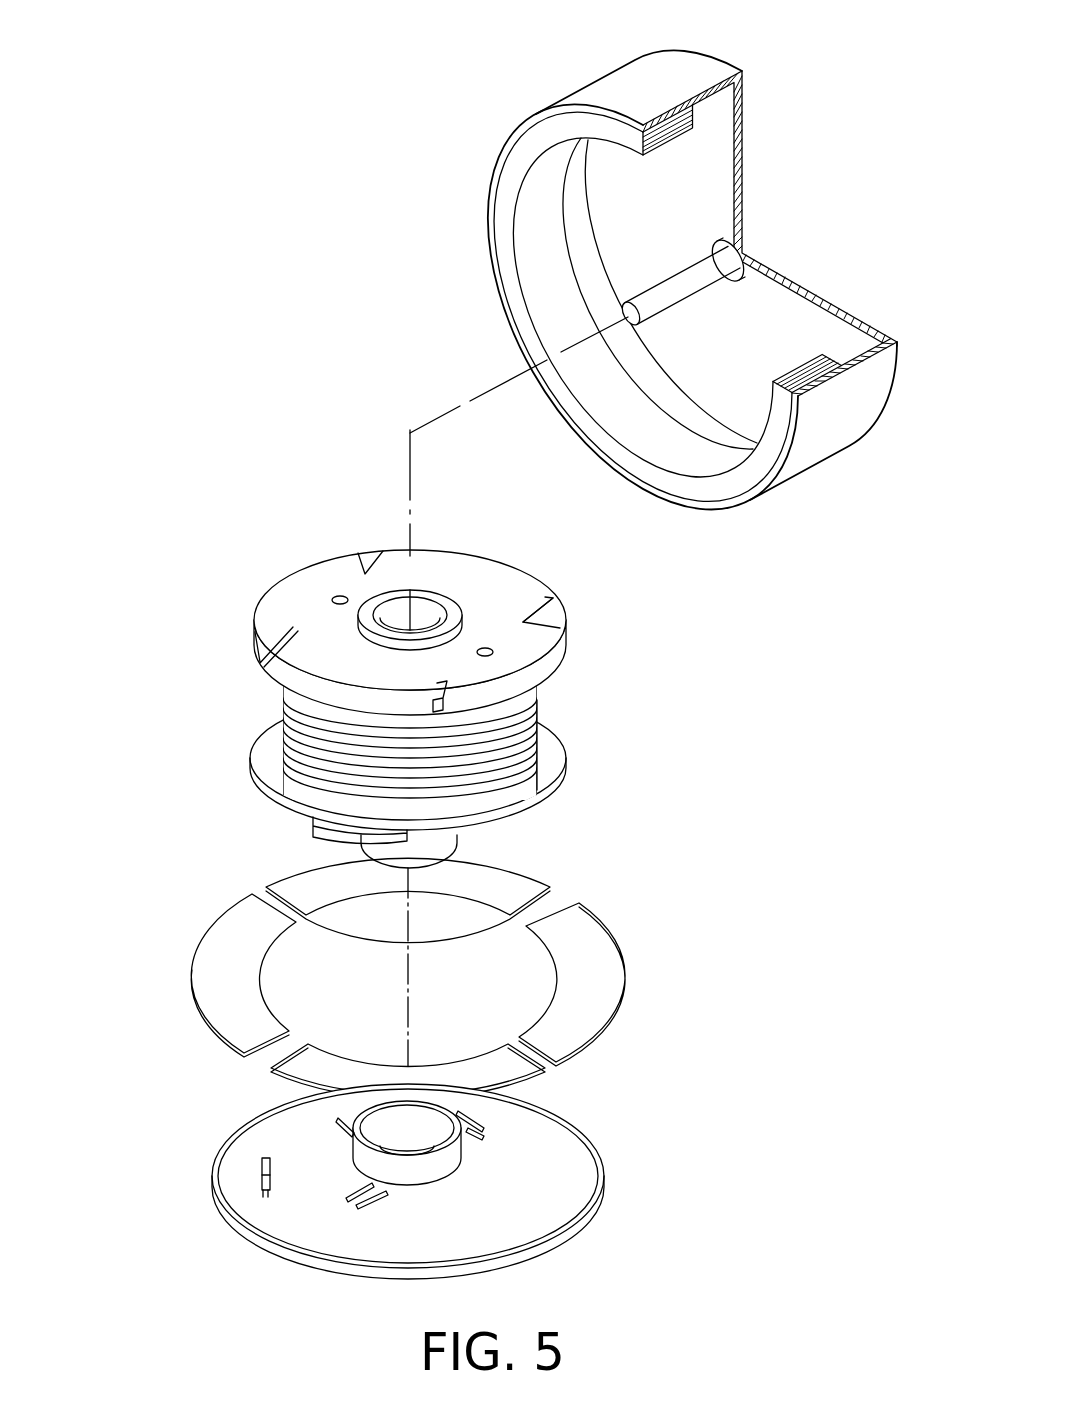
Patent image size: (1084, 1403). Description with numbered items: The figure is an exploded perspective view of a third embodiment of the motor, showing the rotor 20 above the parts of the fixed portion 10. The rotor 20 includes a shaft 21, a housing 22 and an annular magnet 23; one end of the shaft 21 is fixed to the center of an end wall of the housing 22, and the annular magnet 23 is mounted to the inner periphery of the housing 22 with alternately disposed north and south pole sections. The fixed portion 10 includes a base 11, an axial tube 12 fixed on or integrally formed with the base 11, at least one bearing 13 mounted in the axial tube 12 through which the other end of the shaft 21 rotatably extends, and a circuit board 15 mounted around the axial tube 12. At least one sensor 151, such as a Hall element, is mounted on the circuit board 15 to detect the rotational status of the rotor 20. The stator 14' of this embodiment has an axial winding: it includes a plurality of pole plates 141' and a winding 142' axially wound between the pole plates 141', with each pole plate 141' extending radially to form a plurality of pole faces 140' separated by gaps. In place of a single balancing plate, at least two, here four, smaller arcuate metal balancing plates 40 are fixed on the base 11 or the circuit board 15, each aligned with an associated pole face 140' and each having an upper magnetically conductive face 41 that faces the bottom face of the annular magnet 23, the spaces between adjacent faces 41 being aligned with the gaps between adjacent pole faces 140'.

The fixed portion 10 is at (473, 854).
The base 11 is at (418, 1171).
The axial tube 12 is at (516, 703).
The bearing 13 is at (443, 622).
The stator 14' is at (649, 694).
The pole faces 140' is at (537, 760).
The pole plates 141' is at (619, 643).
The winding 142' is at (609, 745).
The circuit board 15 is at (562, 1140).
The sensor 151 is at (262, 1180).
The rotor 20 is at (617, 255).
The shaft 21 is at (687, 292).
The housing 22 is at (694, 100).
The annular magnet 23 is at (697, 127).
The balancing plates 40 is at (371, 966).
The magnetically conductive face 41 is at (207, 957).